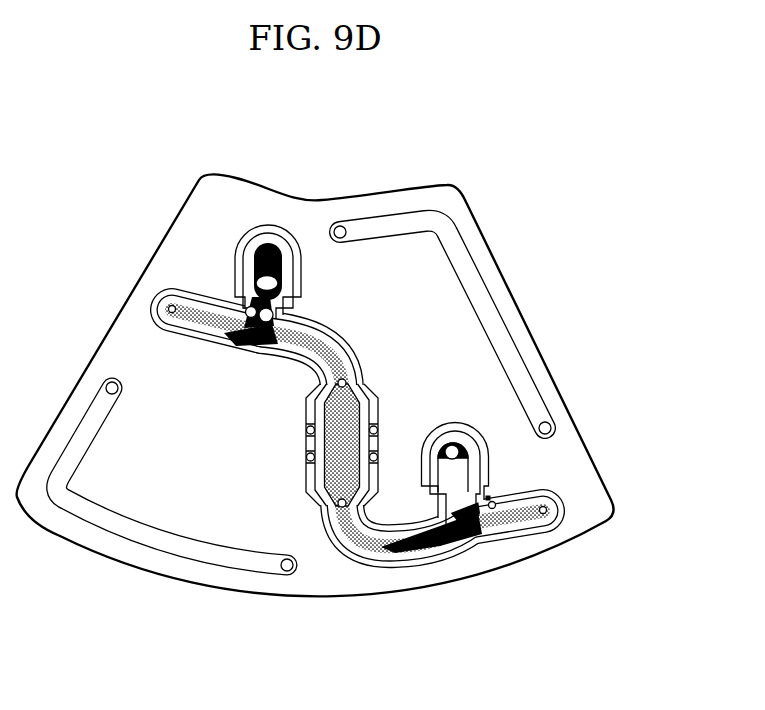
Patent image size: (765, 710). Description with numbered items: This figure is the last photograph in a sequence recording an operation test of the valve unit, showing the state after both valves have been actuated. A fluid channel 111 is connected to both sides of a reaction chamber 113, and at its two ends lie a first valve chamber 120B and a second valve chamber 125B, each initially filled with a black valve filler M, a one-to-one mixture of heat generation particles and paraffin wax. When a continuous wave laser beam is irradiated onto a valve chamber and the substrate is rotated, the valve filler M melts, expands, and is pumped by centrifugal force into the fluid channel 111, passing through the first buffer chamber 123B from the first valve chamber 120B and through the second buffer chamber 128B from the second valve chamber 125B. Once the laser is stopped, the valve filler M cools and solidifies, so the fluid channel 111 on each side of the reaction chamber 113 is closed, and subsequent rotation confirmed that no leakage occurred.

The fluid channel 111 is at (215, 341).
The reaction chamber 113 is at (322, 479).
The first valve chamber 120B is at (472, 451).
The first buffer chamber 123B is at (494, 500).
The second valve chamber 125B is at (255, 255).
The second buffer chamber 128B is at (237, 314).
The valve filler M is at (258, 341).